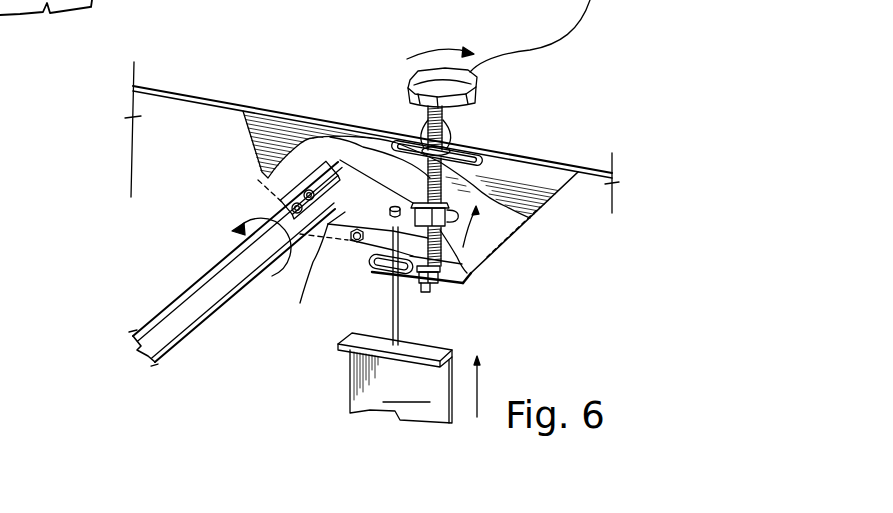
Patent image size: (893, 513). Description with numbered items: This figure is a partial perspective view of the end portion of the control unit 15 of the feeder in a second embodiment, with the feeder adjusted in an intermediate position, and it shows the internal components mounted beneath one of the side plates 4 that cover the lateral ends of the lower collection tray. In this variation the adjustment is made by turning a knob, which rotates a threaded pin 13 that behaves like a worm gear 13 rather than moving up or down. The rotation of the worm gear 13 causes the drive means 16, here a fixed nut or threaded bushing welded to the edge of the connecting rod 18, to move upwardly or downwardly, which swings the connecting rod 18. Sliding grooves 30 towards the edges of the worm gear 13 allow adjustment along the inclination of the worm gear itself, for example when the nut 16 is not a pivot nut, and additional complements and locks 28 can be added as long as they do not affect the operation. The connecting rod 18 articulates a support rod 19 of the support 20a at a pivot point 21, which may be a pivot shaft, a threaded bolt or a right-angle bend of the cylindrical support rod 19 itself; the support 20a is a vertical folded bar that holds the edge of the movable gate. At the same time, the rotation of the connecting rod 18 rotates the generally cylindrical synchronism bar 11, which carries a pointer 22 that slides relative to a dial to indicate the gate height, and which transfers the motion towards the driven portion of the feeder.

The side plate 4 is at (156, 131).
The synchronism bar 11 is at (168, 287).
The threaded pin (worm gear) 13 is at (458, 117).
The control unit 15 is at (327, 105).
The drive means (nut) 16 is at (468, 271).
The connecting rod 18 is at (300, 303).
The support rod 19 is at (390, 297).
The support 20a is at (409, 378).
The pivot point 21 is at (388, 211).
The pointer 22 is at (297, 180).
The lock 28 is at (457, 143).
The sliding groove 30 is at (540, 207).